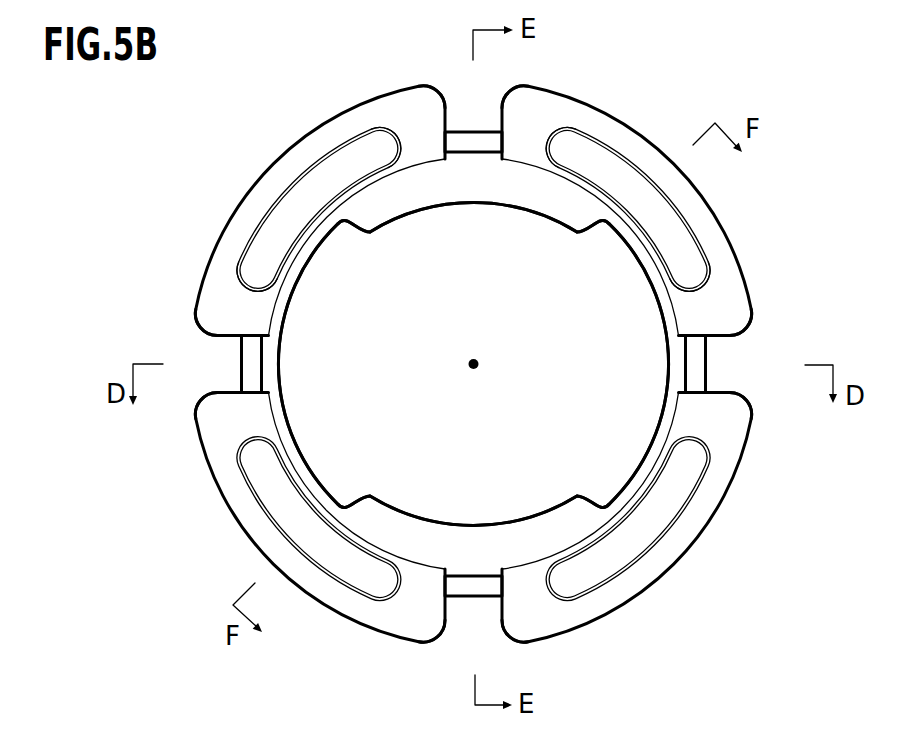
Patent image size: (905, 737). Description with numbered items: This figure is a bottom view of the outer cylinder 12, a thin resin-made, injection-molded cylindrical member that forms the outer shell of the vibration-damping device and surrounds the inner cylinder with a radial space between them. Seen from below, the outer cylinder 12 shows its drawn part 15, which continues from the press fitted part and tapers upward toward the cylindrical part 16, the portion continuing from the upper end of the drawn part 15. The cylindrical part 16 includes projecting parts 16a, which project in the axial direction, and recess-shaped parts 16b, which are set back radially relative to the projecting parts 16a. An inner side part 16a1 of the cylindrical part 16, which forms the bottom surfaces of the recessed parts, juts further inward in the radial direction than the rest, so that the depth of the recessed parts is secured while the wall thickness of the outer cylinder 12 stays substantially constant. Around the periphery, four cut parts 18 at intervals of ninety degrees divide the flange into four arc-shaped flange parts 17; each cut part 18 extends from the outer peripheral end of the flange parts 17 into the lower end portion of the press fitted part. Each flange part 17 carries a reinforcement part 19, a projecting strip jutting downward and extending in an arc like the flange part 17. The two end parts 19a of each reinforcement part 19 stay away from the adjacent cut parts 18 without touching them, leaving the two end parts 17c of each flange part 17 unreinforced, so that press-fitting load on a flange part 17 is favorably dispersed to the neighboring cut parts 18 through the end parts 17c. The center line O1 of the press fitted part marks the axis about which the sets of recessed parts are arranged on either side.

The outer cylinder 12 is at (620, 85).
The drawn part 15 is at (277, 318).
The cylindrical part 16 is at (473, 364).
The projecting part 16a is at (525, 212).
The inner side part 16a1 is at (443, 206).
The recess-shaped part 16b is at (279, 384).
The flange part 17 is at (256, 183).
The end part of flange part 17c is at (430, 103).
The cut part 18 is at (500, 118).
The reinforcement part 19 is at (317, 197).
The end part of reinforcement part 19a is at (375, 153).
The center line O1 is at (477, 361).